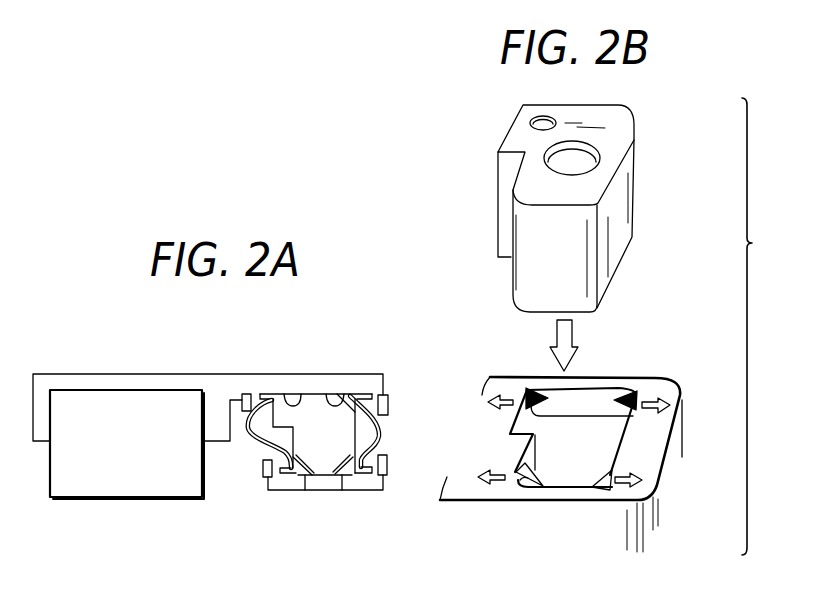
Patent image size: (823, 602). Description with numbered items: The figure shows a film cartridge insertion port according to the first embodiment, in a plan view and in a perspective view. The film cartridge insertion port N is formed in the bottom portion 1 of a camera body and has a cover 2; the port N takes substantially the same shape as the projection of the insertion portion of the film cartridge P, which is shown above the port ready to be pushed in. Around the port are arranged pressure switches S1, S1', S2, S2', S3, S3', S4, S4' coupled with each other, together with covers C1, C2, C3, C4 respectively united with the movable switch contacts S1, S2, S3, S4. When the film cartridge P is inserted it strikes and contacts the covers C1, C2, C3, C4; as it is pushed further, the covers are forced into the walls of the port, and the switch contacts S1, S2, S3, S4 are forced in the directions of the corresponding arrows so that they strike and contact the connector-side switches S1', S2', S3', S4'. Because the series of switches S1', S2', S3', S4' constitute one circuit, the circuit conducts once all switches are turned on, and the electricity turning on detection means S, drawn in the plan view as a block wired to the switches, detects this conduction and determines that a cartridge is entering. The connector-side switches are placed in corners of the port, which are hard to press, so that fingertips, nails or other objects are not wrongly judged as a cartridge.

In FIG. 2A, the electricity turning on detection means S is at (76, 501).
In FIG. 2A, the pressure switch (connector side) S4' is at (238, 371).
In FIG. 2A, the pressure switch (switch contact) S4 is at (269, 393).
In FIG. 2A, the cover C4 is at (293, 394).
In FIG. 2B, the cover C4 is at (527, 392).
In FIG. 2A, the cover C1 is at (331, 395).
In FIG. 2B, the cover C1 is at (628, 397).
In FIG. 2A, the pressure switch (switch contact) S1 is at (368, 391).
In FIG. 2A, the pressure switch (connector side) S1' is at (401, 373).
In FIG. 2A, the pressure switch (connector side) S3' is at (252, 500).
In FIG. 2A, the pressure switch (switch contact) S3 is at (280, 501).
In FIG. 2A, the cover C3 is at (305, 490).
In FIG. 2B, the cover C3 is at (518, 488).
In FIG. 2A, the cover C2 is at (340, 490).
In FIG. 2B, the cover C2 is at (610, 490).
In FIG. 2A, the pressure switch (switch contact) S2 is at (372, 506).
In FIG. 2A, the pressure switch (connector side) S2' is at (404, 495).
In FIG. 2B, the film cartridge P is at (623, 204).
In FIG. 2B, the film cartridge insertion port N is at (585, 397).
In FIG. 2B, the bottom portion of camera body 1 is at (675, 381).
In FIG. 2B, the cover of film cartridge insertion port 2 is at (606, 447).